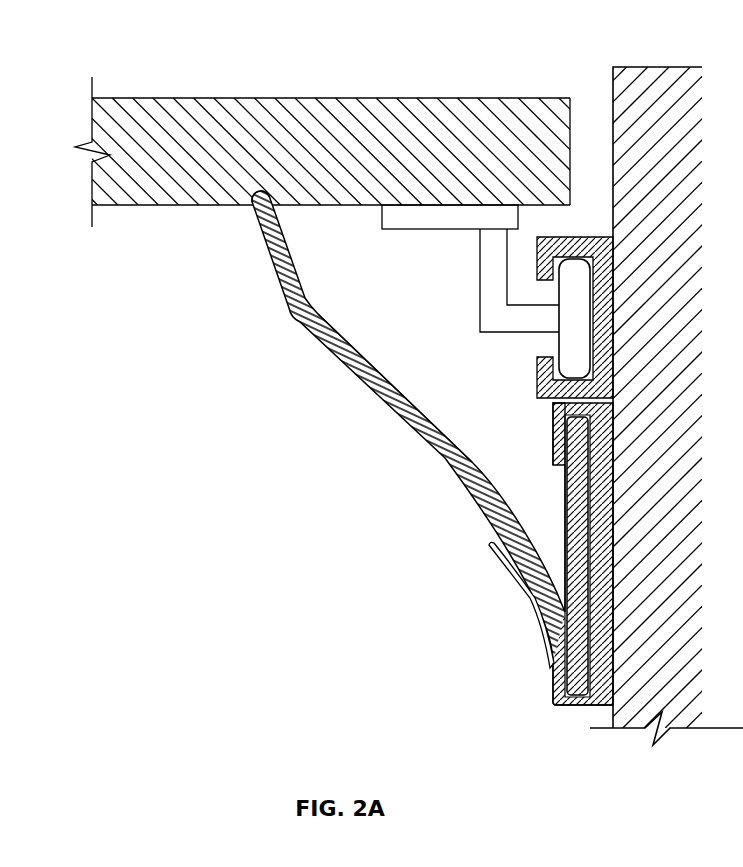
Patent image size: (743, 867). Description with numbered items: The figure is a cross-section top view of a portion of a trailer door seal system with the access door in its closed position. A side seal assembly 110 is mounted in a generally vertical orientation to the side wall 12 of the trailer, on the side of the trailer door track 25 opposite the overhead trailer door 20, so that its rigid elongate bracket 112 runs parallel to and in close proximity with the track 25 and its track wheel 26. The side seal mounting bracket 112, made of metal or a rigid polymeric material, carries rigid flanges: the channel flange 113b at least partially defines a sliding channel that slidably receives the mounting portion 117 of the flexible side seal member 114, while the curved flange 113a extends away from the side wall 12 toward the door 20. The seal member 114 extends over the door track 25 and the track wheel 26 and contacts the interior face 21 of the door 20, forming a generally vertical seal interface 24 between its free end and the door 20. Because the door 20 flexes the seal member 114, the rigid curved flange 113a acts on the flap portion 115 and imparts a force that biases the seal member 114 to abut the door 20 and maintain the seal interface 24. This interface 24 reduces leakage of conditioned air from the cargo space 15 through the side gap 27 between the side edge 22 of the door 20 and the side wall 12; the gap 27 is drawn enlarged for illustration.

The side wall 12 is at (612, 96).
The cargo space 15 is at (279, 442).
The overhead trailer door 20 is at (342, 118).
The interior face 21 is at (328, 208).
The side edge 22 is at (542, 84).
The seal interface 24 is at (254, 196).
The trailer door track 25 is at (541, 374).
The track wheel 26 is at (568, 334).
The side gap 27 is at (593, 105).
The side seal assembly 110 is at (434, 551).
The side seal mounting bracket 112 is at (600, 697).
The curved flange 113a is at (526, 618).
The channel flange 113b is at (545, 448).
The side seal member 114 is at (414, 436).
The flap portion 115 is at (393, 402).
The mounting portion 117 is at (573, 517).